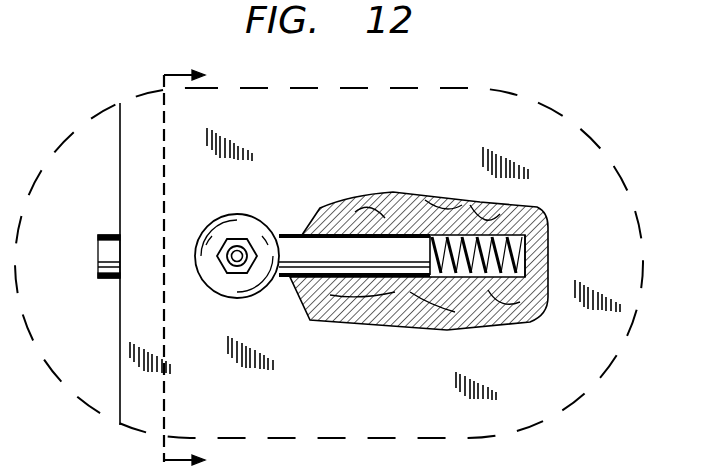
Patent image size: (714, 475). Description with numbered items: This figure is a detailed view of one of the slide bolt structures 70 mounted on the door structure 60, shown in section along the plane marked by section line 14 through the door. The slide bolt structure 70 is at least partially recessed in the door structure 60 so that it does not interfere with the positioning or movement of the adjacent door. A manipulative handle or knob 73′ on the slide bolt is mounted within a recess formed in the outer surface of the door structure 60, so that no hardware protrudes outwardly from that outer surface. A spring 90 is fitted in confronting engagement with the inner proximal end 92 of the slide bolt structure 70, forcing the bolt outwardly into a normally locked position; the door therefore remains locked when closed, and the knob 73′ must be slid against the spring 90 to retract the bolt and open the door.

The section line 14- 14 is at (164, 262).
The door structure 60 is at (120, 192).
The slide bolt structure 70 is at (110, 252).
The manipulative handle or knob 73′ is at (237, 283).
The spring 90 is at (523, 205).
The inner proximal end 92 is at (462, 200).